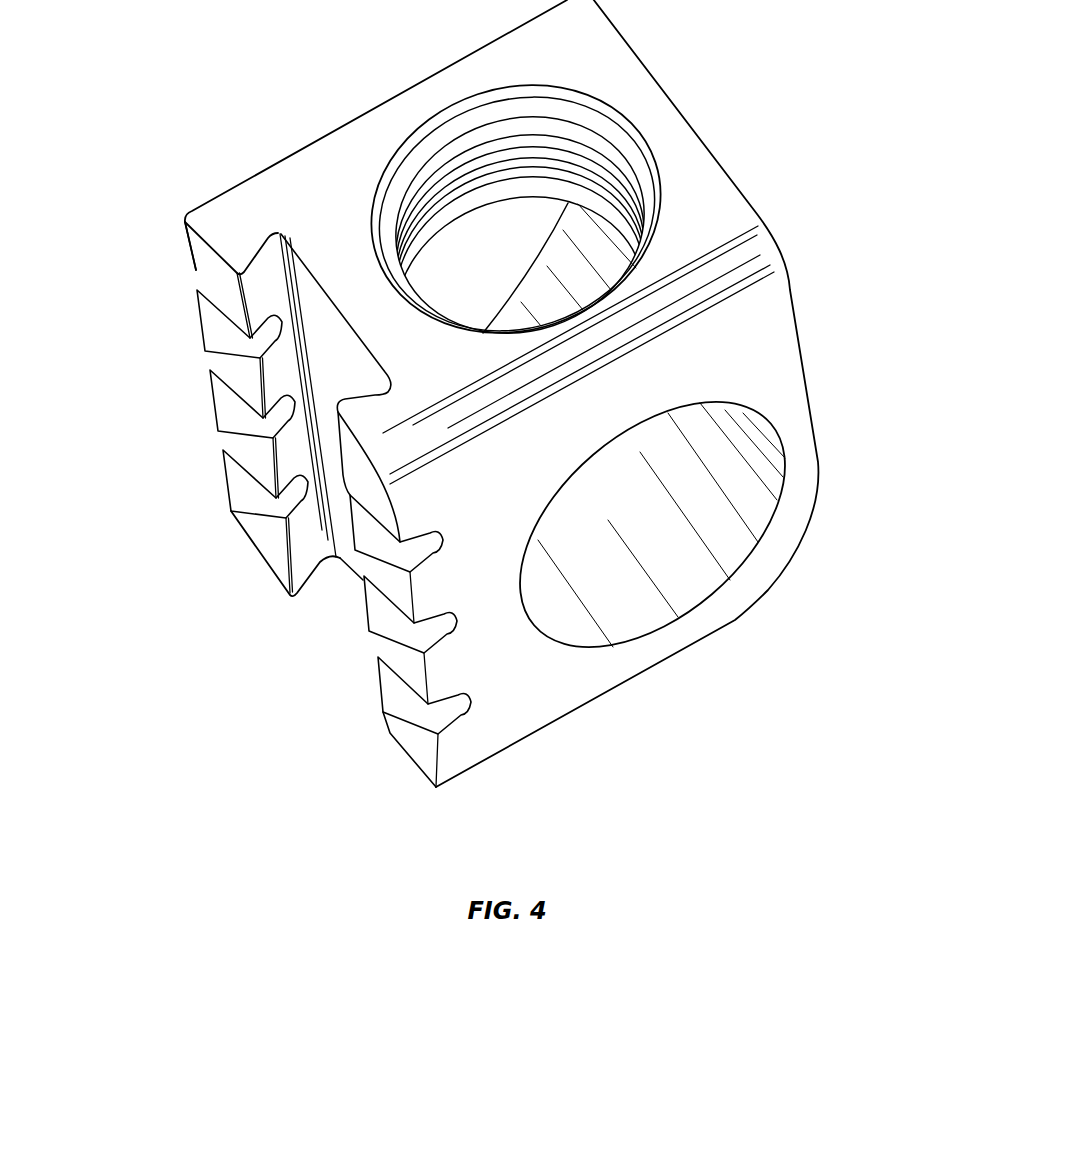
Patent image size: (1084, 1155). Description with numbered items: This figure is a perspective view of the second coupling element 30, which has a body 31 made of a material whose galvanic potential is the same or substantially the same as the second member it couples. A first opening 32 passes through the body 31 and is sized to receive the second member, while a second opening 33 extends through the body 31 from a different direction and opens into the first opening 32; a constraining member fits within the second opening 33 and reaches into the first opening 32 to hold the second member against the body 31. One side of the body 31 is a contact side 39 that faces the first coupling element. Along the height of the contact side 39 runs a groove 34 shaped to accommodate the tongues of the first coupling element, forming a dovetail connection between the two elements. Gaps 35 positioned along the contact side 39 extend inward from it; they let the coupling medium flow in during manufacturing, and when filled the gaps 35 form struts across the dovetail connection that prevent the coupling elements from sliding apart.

The second coupling element 30 is at (810, 181).
The body 31 is at (780, 375).
The first opening 32 is at (680, 578).
The second opening 33 is at (600, 97).
The groove 34 is at (308, 292).
The gaps 35 is at (248, 475).
The contact side 39 is at (203, 265).